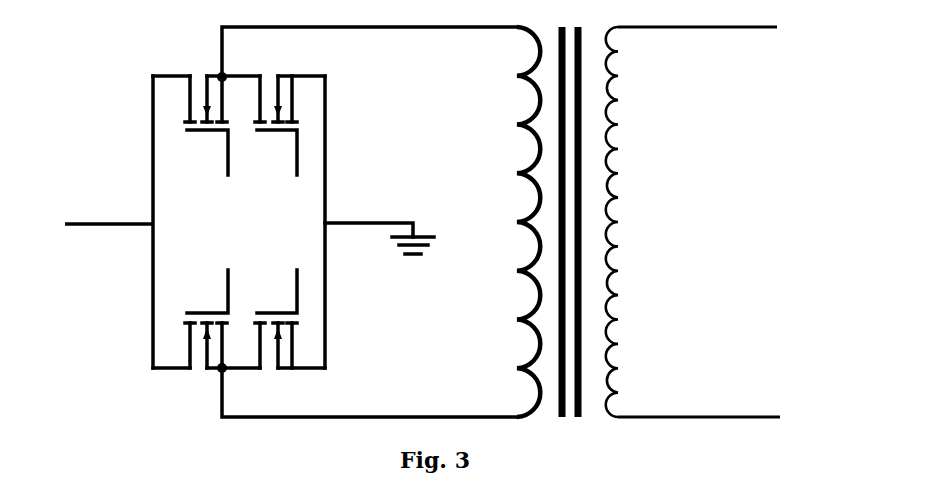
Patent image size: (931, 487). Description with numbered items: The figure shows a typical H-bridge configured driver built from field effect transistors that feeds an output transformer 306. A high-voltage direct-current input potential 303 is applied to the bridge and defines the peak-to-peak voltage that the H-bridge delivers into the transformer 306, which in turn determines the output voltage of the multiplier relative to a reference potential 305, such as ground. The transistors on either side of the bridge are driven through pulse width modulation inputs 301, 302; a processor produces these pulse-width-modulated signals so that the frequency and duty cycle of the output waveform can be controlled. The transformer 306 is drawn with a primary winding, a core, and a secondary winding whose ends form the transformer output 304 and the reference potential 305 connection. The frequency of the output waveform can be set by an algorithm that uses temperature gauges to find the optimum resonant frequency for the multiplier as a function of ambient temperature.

The pulse width modulation input 301 is at (248, 139).
The pulse width modulation input 302 is at (247, 305).
The HV in direct-current potential 303 is at (89, 225).
The transformer output 304 is at (726, 27).
The reference potential 305 is at (720, 418).
The transformer 306 is at (582, 220).